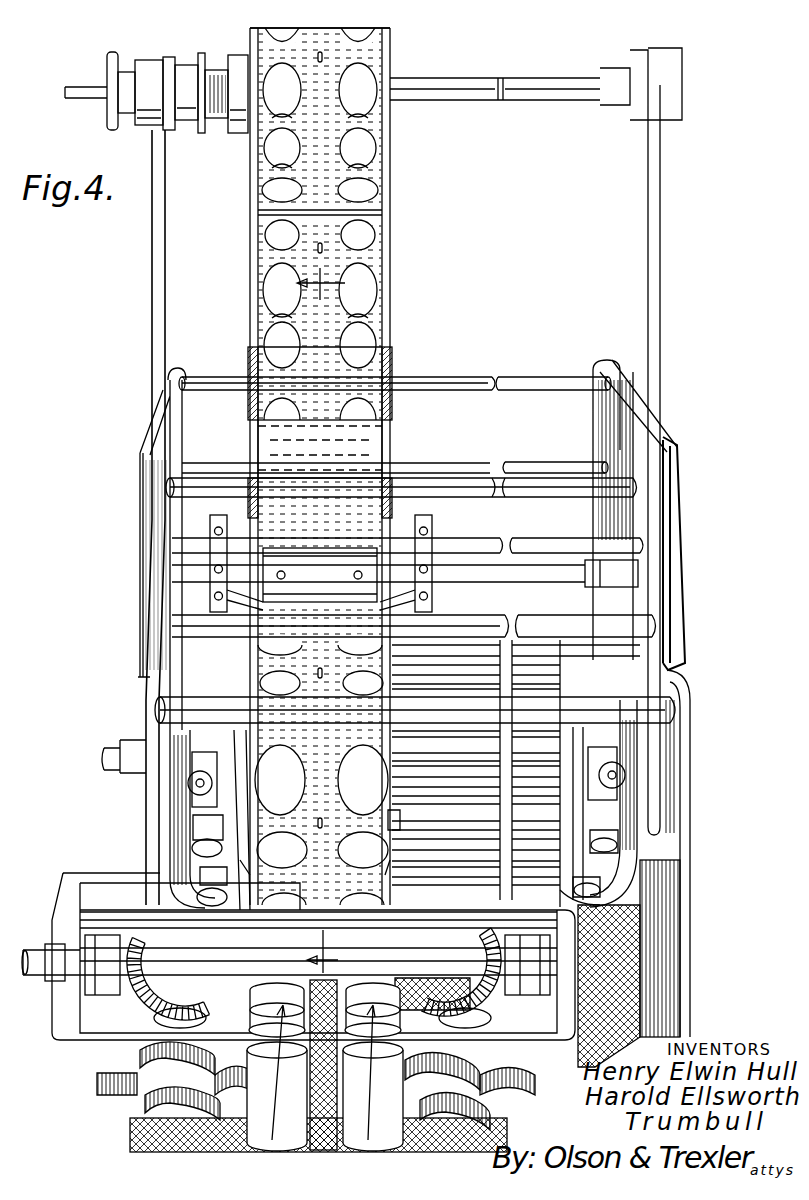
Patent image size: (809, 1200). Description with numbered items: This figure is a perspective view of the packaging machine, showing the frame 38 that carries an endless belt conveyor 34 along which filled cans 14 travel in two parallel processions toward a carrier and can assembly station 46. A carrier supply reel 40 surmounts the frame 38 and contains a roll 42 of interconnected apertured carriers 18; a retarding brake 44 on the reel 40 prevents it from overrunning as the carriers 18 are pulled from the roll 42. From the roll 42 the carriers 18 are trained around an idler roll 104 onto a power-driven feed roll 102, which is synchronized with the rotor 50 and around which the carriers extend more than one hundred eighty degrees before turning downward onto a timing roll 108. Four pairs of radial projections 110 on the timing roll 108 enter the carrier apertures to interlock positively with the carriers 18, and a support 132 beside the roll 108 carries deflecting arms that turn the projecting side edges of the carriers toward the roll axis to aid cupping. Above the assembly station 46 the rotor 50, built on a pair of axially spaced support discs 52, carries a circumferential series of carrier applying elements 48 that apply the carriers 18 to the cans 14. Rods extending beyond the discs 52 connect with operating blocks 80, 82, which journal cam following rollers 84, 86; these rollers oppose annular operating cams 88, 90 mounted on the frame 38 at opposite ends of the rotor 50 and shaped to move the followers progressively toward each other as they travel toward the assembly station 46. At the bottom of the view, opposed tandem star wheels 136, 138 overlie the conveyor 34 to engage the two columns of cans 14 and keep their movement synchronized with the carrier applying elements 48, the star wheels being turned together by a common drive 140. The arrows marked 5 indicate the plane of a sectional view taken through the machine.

The retarding brake 44 is at (245, 52).
The roll of interconnected carriers 42 is at (325, 38).
The carrier supply reel 40 is at (392, 60).
The apertured carrier 18 is at (389, 327).
The idler roll 104 is at (379, 380).
The feed roll 102 is at (372, 450).
The frame 38 is at (673, 490).
The support 132 is at (433, 531).
The radial projections 110 is at (354, 575).
The timing roll 108 is at (433, 590).
The operating block 80 is at (206, 752).
The support disc 52 is at (243, 745).
The rotor 50 is at (590, 738).
The cam following roller 86 is at (626, 773).
The operating block 82 is at (633, 795).
The cam following roller 84 is at (187, 790).
The annular operating cam 88 is at (167, 875).
The carrier applying elements 48 is at (395, 873).
The carrier and can assembly station 46 is at (342, 903).
The annular operating cam 90 is at (552, 895).
The gear housing 140 is at (120, 970).
The star wheel 136 is at (118, 1088).
The endless belt conveyor 34 is at (160, 1153).
The container 14 is at (277, 1130).
The star wheel 138 is at (420, 1186).
The section line 5- 5 is at (328, 620).